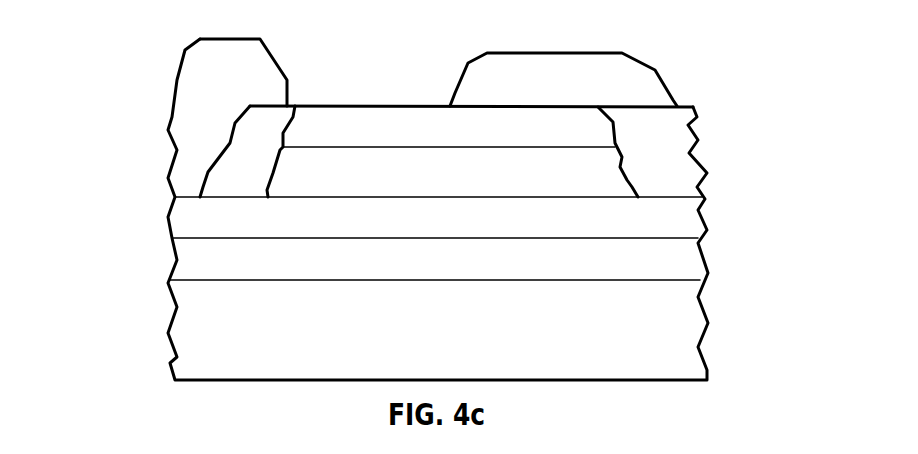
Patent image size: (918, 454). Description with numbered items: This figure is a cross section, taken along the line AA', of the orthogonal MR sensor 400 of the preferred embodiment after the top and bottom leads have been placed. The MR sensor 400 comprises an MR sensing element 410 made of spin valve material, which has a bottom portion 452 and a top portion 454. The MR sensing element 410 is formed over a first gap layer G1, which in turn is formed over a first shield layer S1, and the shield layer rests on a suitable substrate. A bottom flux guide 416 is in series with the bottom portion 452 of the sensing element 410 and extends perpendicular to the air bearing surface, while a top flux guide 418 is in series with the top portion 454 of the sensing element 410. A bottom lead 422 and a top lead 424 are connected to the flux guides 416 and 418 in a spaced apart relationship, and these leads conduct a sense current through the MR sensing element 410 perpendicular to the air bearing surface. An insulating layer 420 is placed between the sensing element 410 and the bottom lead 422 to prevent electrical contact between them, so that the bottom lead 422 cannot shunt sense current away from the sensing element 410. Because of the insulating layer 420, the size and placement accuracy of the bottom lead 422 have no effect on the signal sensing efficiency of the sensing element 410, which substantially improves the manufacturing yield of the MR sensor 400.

The orthogonal MR sensor 400 is at (122, 378).
The MR sensing element 410 is at (603, 183).
The bottom flux guide 416 is at (672, 150).
The top flux guide 418 is at (272, 125).
The insulating layer 420 is at (414, 117).
The bottom lead 422 is at (637, 82).
The top lead 424 is at (232, 53).
The bottom portion 452 is at (598, 158).
The top portion 454 is at (418, 153).